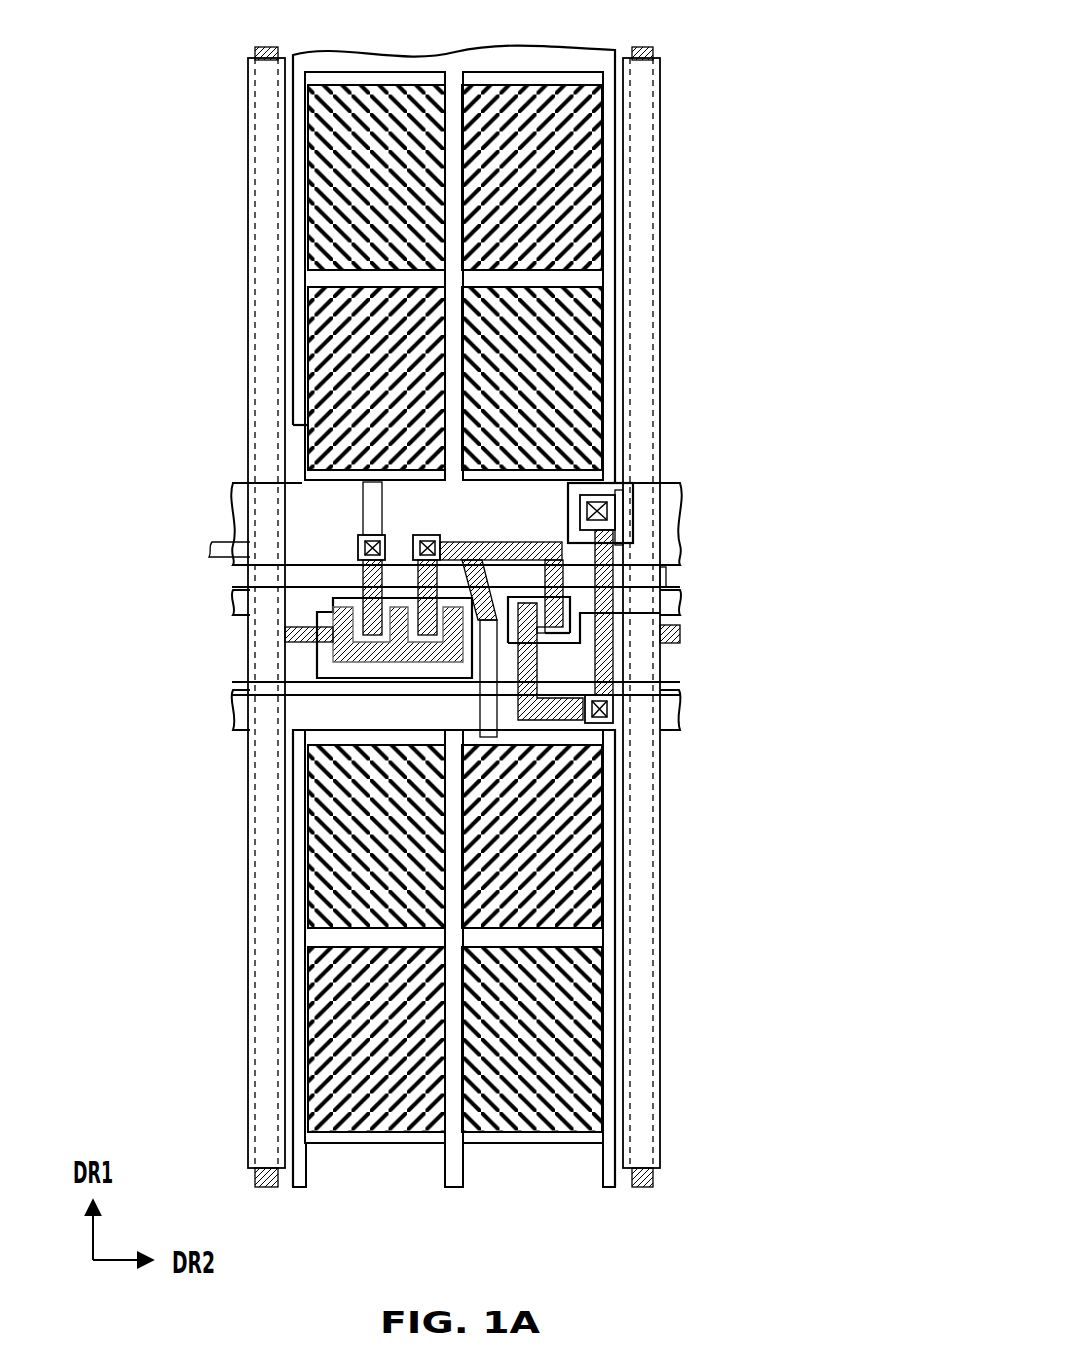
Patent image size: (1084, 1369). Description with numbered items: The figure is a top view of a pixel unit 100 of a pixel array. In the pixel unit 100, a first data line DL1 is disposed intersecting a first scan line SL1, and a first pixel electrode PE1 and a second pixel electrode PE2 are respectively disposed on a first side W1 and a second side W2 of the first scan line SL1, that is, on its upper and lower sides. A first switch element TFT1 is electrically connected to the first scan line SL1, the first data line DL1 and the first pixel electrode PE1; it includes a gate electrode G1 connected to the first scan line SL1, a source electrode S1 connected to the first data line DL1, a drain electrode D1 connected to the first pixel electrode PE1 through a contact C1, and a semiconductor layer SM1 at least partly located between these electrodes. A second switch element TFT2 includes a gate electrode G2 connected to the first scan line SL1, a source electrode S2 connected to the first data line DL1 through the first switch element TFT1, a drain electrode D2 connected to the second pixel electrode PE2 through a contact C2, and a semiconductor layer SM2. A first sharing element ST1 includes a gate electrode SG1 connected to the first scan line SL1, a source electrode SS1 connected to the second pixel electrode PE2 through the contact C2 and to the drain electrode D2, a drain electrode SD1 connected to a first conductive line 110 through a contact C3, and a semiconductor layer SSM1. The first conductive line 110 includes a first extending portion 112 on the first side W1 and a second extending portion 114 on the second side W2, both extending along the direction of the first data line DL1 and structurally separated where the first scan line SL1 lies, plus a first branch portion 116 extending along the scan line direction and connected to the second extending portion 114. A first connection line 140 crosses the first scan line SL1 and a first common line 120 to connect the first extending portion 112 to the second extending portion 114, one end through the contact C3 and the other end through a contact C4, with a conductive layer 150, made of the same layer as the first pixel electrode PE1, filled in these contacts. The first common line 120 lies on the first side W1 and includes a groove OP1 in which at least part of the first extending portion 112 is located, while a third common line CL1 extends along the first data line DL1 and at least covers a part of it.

The pixel unit 100 is at (830, 1250).
The first conductive line 110 is at (866, 475).
The first extending portion 112 is at (612, 344).
The second extending portion 114 is at (603, 1207).
The first branch portion 116 is at (156, 765).
The first common line 120 is at (237, 518).
The first connection line 140 is at (602, 578).
The conductive layer 150 is at (586, 489).
The third common line CL1 is at (262, 348).
The first data line DL1 is at (265, 48).
The first pixel electrode PE1 is at (312, 153).
The second pixel electrode PE2 is at (312, 880).
The first scan line SL1 is at (246, 604).
The contact C1 is at (370, 534).
The contact C2 is at (425, 534).
The contact C3 is at (614, 708).
The contact C4 is at (604, 500).
The groove OP1 is at (612, 531).
The first switch element TFT1 is at (866, 5).
The semiconductor layer SM1 is at (210, 650).
The drain electrode D1 is at (145, 575).
The source electrode S1 is at (145, 672).
The gate electrode G1 is at (195, 688).
The second switch element TFT2 is at (866, 162).
The semiconductor layer SM2 is at (148, 628).
The drain electrode D2 is at (148, 713).
The source electrode S2 is at (200, 735).
The gate electrode G2 is at (200, 786).
The first sharing element ST1 is at (866, 318).
The semiconductor layer SSM1 is at (545, 645).
The source electrode SS1 is at (562, 640).
The drain electrode SD1 is at (566, 713).
The gate electrode SG1 is at (566, 645).
The first side W1 is at (668, 583).
The second side W2 is at (670, 621).